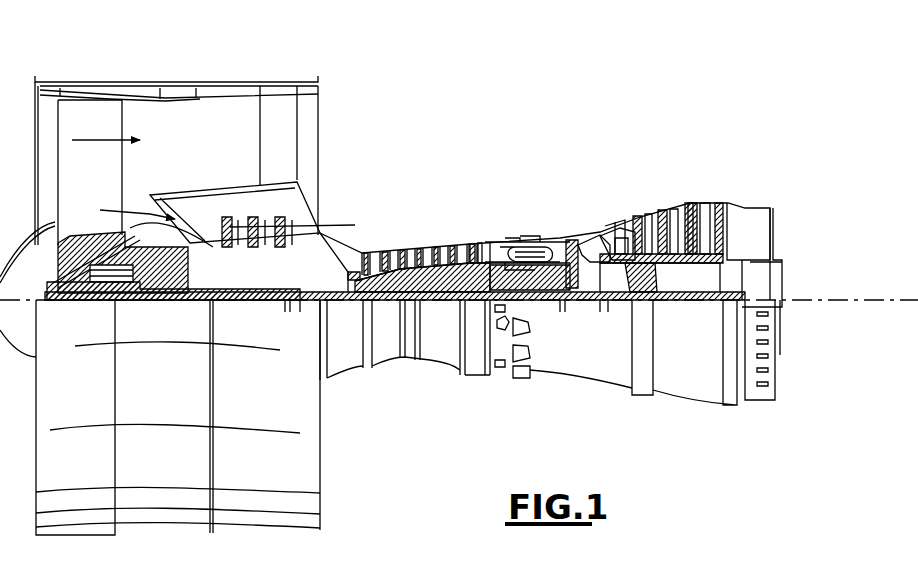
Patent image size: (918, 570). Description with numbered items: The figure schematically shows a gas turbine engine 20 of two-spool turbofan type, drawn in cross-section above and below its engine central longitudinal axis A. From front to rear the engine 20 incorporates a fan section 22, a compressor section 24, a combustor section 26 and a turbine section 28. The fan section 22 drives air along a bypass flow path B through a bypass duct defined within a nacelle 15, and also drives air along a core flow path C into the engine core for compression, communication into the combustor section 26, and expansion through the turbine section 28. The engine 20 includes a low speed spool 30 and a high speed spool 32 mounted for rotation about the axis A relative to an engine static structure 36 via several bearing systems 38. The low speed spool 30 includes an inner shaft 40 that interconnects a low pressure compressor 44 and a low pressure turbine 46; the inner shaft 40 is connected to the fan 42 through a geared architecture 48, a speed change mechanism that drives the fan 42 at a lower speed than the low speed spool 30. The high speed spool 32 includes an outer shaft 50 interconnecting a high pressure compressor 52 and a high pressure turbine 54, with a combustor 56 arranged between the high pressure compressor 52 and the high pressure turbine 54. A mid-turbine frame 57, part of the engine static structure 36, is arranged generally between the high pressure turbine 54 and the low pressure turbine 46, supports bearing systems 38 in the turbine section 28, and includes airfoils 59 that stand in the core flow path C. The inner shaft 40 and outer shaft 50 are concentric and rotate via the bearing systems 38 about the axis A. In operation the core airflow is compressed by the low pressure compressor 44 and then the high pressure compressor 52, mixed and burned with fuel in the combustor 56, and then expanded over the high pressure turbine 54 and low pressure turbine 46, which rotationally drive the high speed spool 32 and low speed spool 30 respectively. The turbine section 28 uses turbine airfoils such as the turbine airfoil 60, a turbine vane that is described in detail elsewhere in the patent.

The gas turbine engine 20 is at (540, 106).
The fan section 22 is at (122, 76).
The nacelle 15 is at (177, 82).
The fan 42 is at (106, 181).
The low pressure compressor 44 is at (250, 227).
The compressor section 24 is at (358, 226).
The high pressure compressor 52 is at (432, 250).
The high speed spool 32 is at (478, 248).
The combustor section 26 is at (531, 222).
The combustor 56 is at (530, 256).
The high pressure turbine 54 is at (620, 205).
The mid-turbine frame 57 is at (625, 226).
The turbine airfoil 60 is at (636, 236).
The turbine section 28 is at (656, 187).
The low pressure turbine 46 is at (684, 205).
The airfoils 59 is at (633, 275).
The geared architecture 48 is at (184, 301).
The bearing systems 38 is at (290, 301).
The inner shaft 40 is at (335, 364).
The low speed spool 30 is at (445, 314).
The engine static structure 36 is at (476, 375).
The outer shaft 50 is at (536, 310).
The engine central longitudinal axis A is at (840, 299).
The bypass flow path B is at (98, 136).
The core flow path C is at (148, 219).